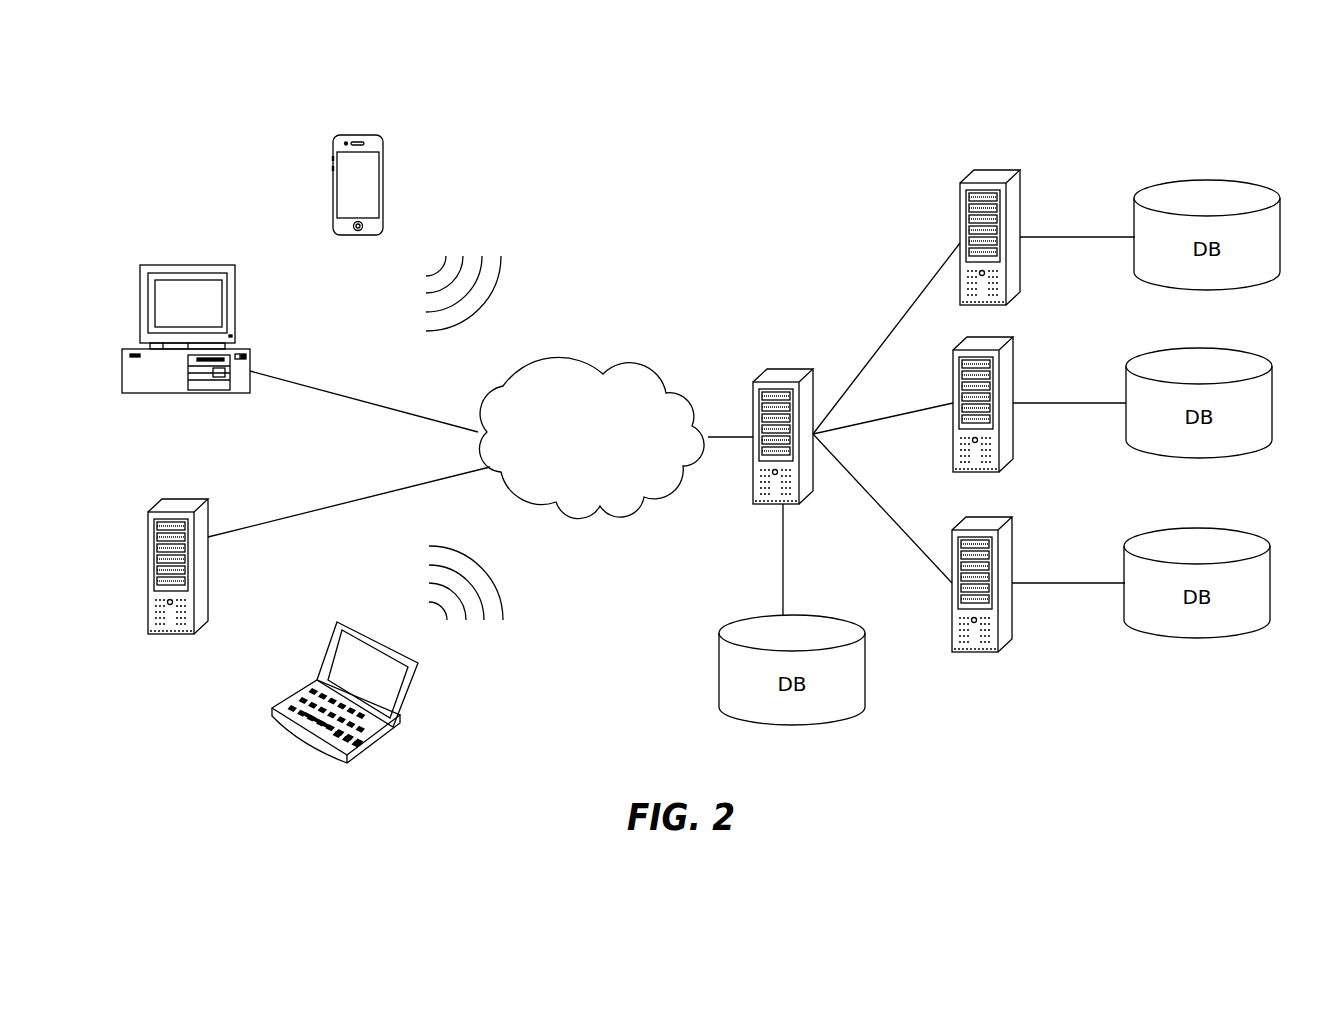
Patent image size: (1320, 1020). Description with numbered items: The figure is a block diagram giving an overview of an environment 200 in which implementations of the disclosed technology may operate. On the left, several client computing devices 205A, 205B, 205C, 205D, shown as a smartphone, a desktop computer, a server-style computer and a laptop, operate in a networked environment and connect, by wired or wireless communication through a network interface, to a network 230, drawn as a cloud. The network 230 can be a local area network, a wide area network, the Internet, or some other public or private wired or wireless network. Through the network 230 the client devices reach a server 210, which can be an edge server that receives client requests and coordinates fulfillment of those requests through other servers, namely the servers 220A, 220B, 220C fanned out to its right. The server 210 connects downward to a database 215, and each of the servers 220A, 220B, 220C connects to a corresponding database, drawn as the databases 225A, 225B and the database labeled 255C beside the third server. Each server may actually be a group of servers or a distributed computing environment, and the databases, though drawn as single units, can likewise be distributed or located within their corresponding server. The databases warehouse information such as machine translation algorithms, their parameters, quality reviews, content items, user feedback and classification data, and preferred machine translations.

The environment 200 is at (810, 138).
The client computing device 205A is at (374, 133).
The client computing device 205B is at (232, 266).
The client computing device 205C is at (202, 497).
The client computing device 205D is at (417, 695).
The network 230 is at (650, 359).
The server 210 is at (798, 372).
The database 215 is at (840, 622).
The server 220A is at (1022, 172).
The server 220B is at (1012, 337).
The server 220C is at (1010, 519).
The database 225A is at (1203, 181).
The database 225B is at (1195, 348).
The database 255C is at (1193, 528).